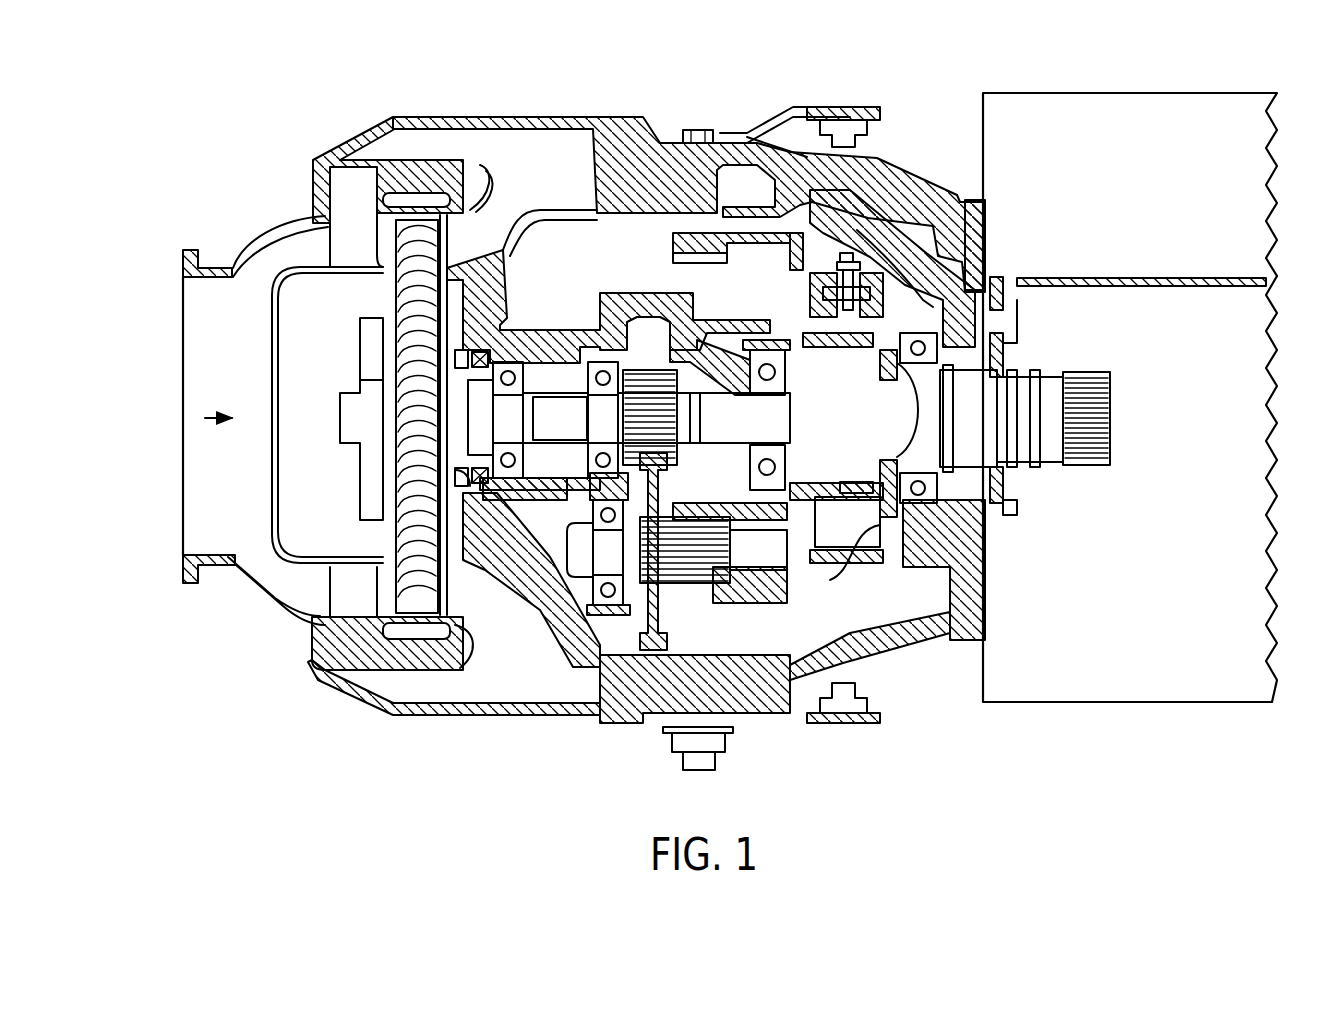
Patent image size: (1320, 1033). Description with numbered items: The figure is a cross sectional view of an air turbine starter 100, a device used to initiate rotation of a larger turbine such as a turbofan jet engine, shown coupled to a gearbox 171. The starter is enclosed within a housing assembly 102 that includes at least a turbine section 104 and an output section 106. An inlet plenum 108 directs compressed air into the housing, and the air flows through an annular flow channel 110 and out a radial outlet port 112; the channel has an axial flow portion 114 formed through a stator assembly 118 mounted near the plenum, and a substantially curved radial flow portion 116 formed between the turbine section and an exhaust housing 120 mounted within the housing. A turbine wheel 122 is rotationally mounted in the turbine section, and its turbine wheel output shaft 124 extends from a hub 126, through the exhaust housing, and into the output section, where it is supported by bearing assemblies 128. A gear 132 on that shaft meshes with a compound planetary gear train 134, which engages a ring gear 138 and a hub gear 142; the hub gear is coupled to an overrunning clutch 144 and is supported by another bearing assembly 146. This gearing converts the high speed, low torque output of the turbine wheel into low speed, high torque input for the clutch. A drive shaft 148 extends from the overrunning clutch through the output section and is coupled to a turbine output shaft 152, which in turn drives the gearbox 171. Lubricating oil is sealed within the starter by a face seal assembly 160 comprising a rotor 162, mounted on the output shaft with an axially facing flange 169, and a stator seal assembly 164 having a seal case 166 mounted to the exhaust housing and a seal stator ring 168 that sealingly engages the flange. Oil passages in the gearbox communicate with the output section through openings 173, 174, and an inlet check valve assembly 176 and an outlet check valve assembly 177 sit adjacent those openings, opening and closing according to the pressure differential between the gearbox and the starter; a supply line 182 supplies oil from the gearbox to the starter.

The air turbine starter 100 is at (758, 105).
The housing assembly 102 is at (913, 165).
The turbine section 104 is at (436, 116).
The output section 106 is at (988, 241).
The inlet plenum 108 is at (185, 338).
The annular flow channel 110 is at (247, 402).
The radial outlet port 112 is at (567, 181).
The axial flow portion 114 is at (373, 259).
The radial flow portion 116 is at (483, 251).
The stator assembly 118 is at (270, 485).
The exhaust housing 120 is at (590, 226).
The turbine wheel 122 is at (370, 366).
The turbine wheel output shaft 124 is at (700, 423).
The hub 126 is at (372, 466).
The bearing assemblies 128 is at (522, 365).
The gear 132 is at (680, 399).
The compound planetary gear train 134 is at (680, 530).
The ring gear 138 is at (793, 602).
The hub gear 142 is at (832, 480).
The overrunning clutch 144 is at (867, 534).
The bearing assembly 146 is at (786, 371).
The drive shaft 148 is at (975, 446).
The turbine output shaft 152 is at (1113, 391).
The face seal assembly 160 is at (455, 352).
The rotor 162 is at (486, 356).
The stator seal assembly 164 is at (462, 352).
The seal case 166 is at (505, 520).
The seal stator ring 168 is at (470, 478).
The axially facing flange 169 is at (470, 372).
The gearbox 171 is at (1125, 703).
The opening 173 is at (1020, 292).
The opening 174 is at (1007, 514).
The inlet check valve assembly 176 is at (1050, 332).
The outlet check valve assembly 177 is at (1060, 514).
The supply line 182 is at (1137, 276).